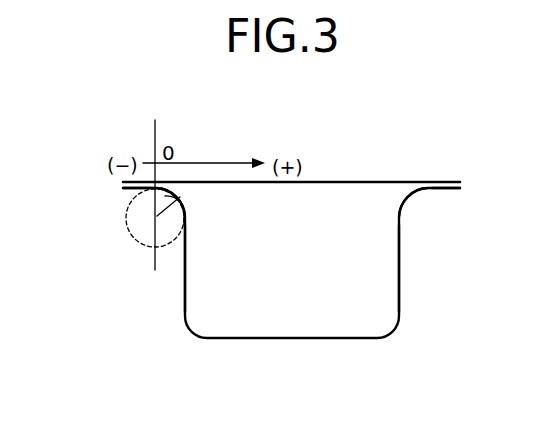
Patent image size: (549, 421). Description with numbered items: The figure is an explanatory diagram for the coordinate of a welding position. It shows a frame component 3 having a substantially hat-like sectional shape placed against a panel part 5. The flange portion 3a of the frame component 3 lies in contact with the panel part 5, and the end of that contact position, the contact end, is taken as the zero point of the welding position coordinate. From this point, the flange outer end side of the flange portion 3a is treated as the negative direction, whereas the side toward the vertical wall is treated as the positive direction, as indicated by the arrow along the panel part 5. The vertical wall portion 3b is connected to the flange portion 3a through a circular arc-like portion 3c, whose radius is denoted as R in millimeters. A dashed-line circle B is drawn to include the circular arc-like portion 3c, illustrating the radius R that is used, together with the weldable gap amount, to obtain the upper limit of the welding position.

The panel part 5 is at (345, 181).
The frame component 3 is at (292, 339).
The flange portion 3a is at (123, 189).
The vertical wall portion 3b is at (184, 290).
The circular arc-like portion 3c is at (178, 198).
The circle B is at (127, 223).
The radius of the circular arc-like portion R is at (184, 225).